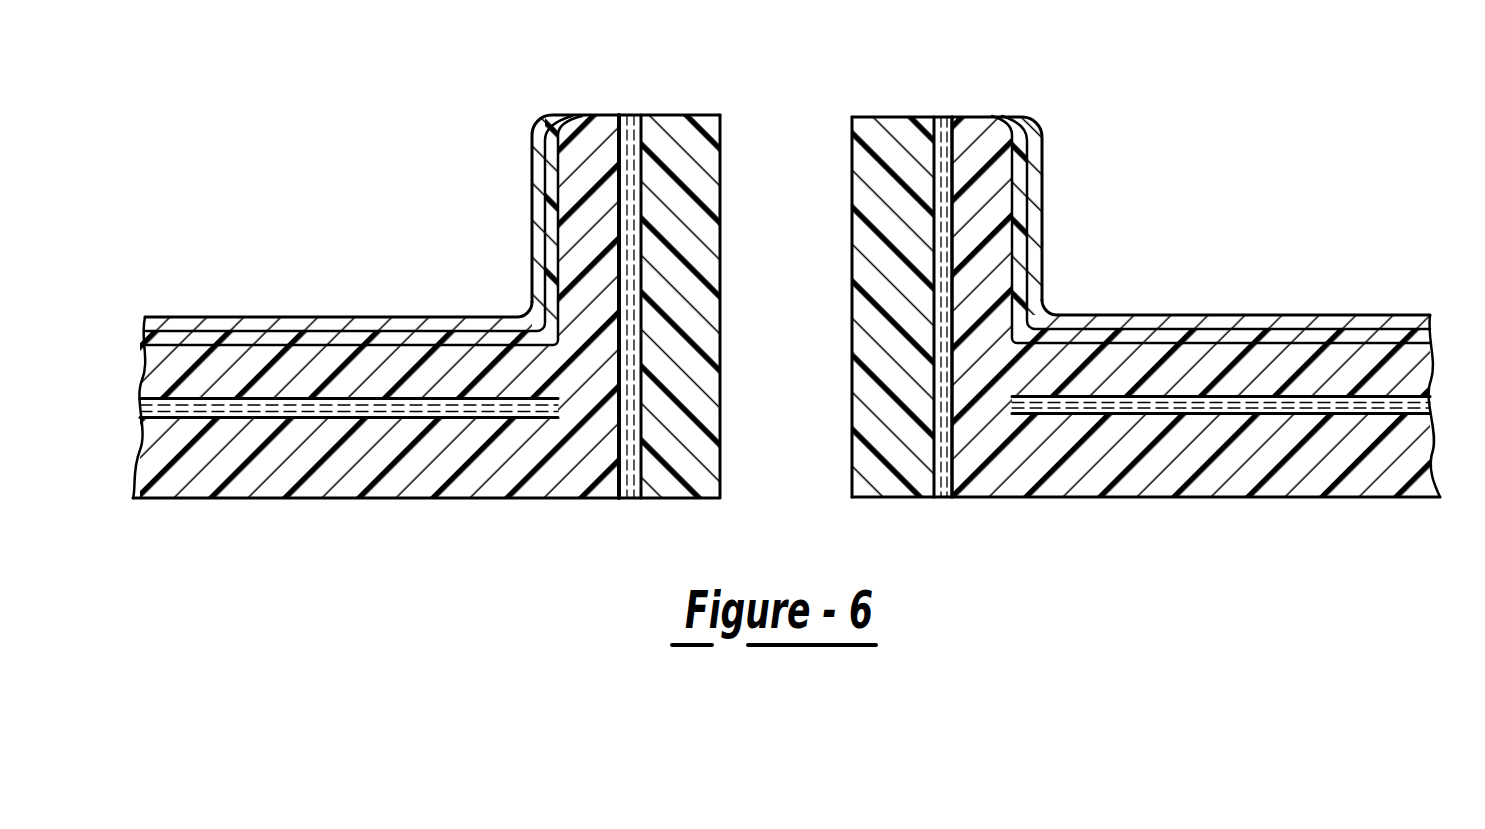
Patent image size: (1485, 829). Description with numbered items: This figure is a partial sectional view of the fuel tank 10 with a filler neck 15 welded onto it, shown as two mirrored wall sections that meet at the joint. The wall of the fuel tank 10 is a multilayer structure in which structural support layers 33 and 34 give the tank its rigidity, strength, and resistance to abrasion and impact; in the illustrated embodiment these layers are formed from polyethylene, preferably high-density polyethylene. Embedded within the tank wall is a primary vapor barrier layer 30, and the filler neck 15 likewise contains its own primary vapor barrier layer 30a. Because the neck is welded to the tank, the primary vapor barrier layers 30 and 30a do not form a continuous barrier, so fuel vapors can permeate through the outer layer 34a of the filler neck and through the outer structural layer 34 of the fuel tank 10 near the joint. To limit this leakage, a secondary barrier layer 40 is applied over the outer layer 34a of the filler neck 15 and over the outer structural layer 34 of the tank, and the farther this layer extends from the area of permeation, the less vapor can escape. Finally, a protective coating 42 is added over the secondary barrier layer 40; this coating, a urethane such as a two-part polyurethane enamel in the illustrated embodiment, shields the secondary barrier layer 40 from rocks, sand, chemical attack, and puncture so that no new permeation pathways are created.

The fuel tank 10 is at (1285, 498).
The filler neck 15 is at (985, 116).
The primary vapor barrier layer 30 is at (166, 420).
The primary vapor barrier layer 30a is at (626, 113).
The structural support layer 33 is at (285, 477).
The outer structural layer 34 is at (1210, 354).
The outer layer 34a is at (532, 192).
The secondary barrier layer 40 is at (352, 318).
The protective coating 42 is at (207, 317).